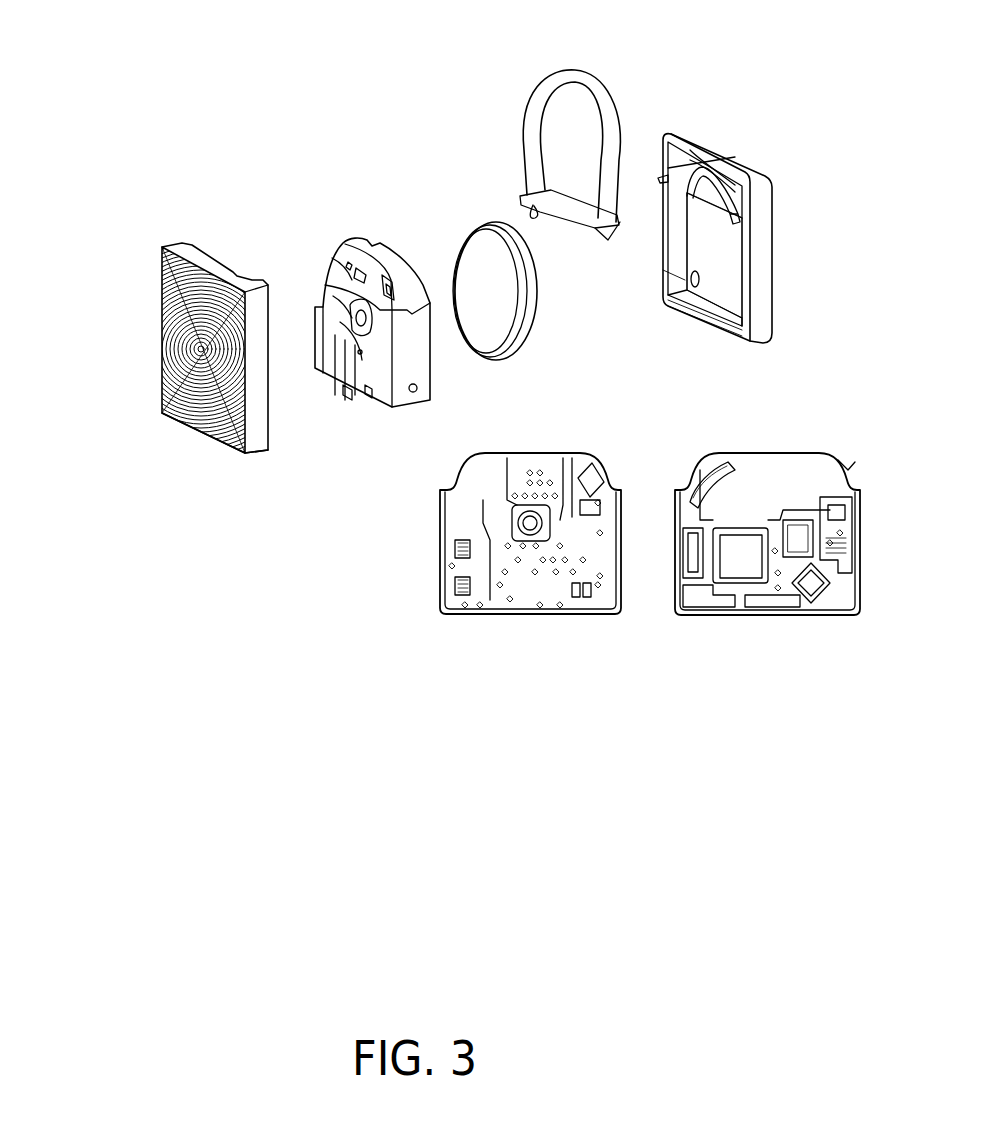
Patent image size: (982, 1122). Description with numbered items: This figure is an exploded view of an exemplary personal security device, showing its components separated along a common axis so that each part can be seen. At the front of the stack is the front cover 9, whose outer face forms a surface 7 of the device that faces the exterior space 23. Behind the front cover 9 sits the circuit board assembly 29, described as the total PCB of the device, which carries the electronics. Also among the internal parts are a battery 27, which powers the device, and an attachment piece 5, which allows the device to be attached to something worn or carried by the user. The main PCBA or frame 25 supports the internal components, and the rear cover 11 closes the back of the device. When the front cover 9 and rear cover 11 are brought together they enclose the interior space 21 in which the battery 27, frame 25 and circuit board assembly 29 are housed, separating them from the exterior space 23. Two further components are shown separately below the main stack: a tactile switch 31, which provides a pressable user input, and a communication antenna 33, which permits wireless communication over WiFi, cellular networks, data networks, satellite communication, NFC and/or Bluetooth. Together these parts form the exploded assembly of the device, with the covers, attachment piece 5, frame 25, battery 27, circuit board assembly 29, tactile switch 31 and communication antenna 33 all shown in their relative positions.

The attachment piece 5 is at (522, 115).
The surface 7 is at (157, 337).
The front cover 9 is at (198, 428).
The rear cover 11 is at (758, 187).
The interior space 21 is at (710, 247).
The exterior space 23 is at (165, 243).
The frame 25 is at (712, 165).
The battery 27 is at (488, 255).
The circuit board assembly 29 is at (340, 272).
The tactile switch 31 is at (513, 528).
The communication antenna 33 is at (742, 563).